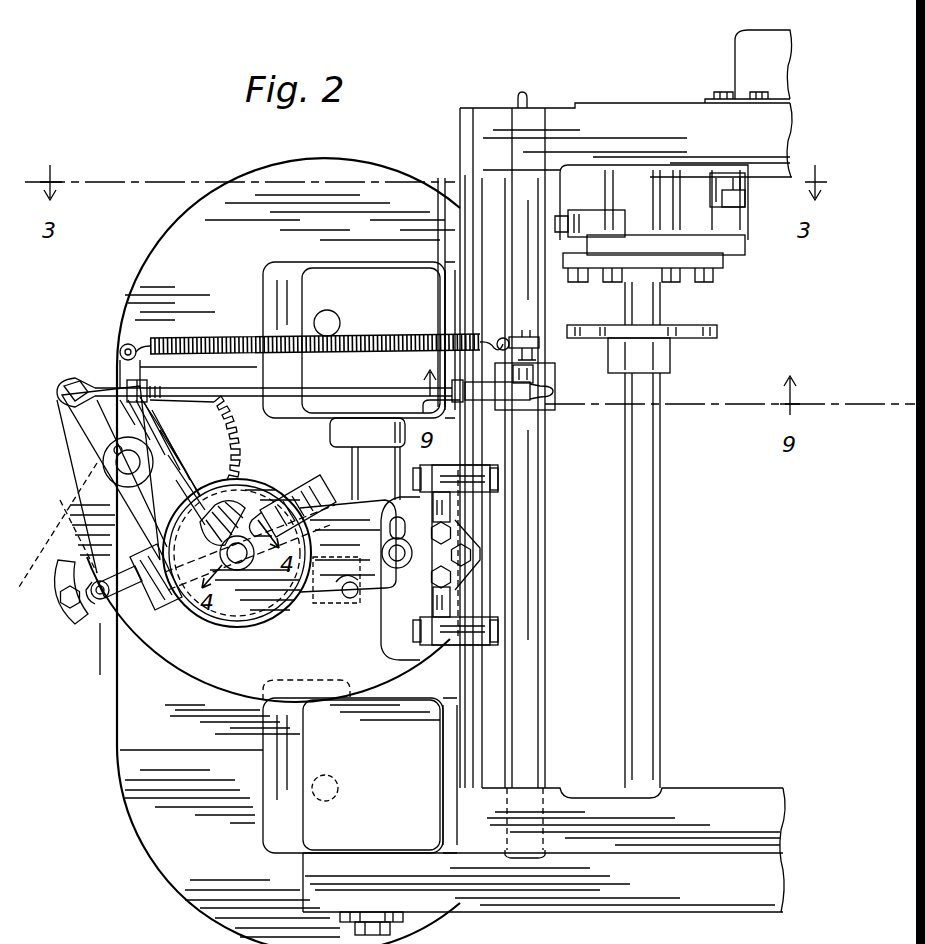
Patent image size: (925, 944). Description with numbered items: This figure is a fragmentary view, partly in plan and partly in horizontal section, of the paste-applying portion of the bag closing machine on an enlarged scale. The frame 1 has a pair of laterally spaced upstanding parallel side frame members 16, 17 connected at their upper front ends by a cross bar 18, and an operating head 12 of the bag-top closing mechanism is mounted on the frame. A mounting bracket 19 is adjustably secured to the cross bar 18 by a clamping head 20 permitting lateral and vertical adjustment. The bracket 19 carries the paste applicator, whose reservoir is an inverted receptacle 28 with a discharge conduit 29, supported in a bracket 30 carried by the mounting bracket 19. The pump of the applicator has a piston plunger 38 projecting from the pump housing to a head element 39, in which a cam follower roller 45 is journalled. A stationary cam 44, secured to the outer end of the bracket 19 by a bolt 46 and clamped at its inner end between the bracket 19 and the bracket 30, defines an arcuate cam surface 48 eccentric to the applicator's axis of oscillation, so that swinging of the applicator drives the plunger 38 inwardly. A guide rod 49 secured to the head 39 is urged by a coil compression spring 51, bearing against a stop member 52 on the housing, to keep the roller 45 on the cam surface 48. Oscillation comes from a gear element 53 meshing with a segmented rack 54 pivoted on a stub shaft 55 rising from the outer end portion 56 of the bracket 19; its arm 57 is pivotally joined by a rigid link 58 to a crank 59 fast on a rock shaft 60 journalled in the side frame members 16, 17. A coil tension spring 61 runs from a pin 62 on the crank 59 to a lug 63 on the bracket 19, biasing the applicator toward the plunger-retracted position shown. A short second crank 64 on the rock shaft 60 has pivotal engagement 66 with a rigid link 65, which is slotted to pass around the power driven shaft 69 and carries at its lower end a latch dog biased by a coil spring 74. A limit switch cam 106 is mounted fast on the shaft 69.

The frame 1 is at (722, 809).
The operating head 12 is at (398, 308).
The side frame member 16 is at (603, 135).
The side frame member 17 is at (673, 812).
The cross bar 18 is at (472, 700).
The mounting bracket 19 is at (322, 605).
The clamping head 20 is at (473, 585).
The receptacle 28 is at (235, 625).
The discharge conduit 29 is at (248, 557).
The bracket 30 is at (262, 625).
The piston plunger 38 is at (158, 600).
The head element 39 is at (128, 604).
The stationary cam 44 is at (140, 698).
The cam follower roller 45 is at (80, 585).
The bolt 46 is at (68, 605).
The arcuate cam surface 48 is at (190, 672).
The guide rod 49 is at (140, 575).
The coil compression spring 51 is at (296, 488).
The stop member 52 is at (310, 484).
The worm 53 is at (225, 525).
The segmented rack 54 is at (157, 507).
The stub shaft 55 is at (118, 460).
The outer end portion 56 is at (105, 503).
The arm 57 is at (92, 428).
The rigid link 58 is at (335, 397).
The crank 59 is at (538, 370).
The rock shaft 60 is at (525, 483).
The coil tension spring 61 is at (222, 338).
The pin 62 is at (525, 338).
The lug 63 is at (118, 366).
The second crank 64 is at (570, 250).
The rigid link 65 is at (578, 228).
The pivotal engagement 66 is at (603, 207).
The power driven shaft 69 is at (645, 540).
The coil spring 74 is at (692, 200).
The limit switch cam 106 is at (691, 331).